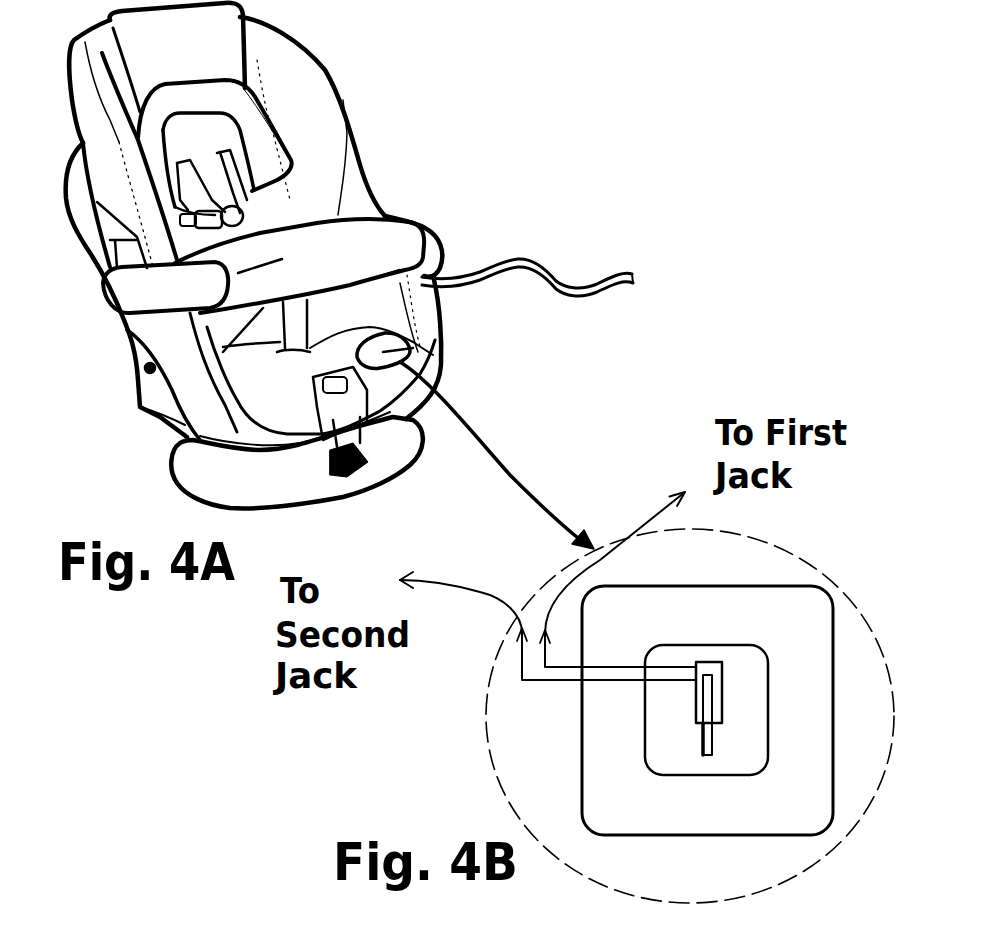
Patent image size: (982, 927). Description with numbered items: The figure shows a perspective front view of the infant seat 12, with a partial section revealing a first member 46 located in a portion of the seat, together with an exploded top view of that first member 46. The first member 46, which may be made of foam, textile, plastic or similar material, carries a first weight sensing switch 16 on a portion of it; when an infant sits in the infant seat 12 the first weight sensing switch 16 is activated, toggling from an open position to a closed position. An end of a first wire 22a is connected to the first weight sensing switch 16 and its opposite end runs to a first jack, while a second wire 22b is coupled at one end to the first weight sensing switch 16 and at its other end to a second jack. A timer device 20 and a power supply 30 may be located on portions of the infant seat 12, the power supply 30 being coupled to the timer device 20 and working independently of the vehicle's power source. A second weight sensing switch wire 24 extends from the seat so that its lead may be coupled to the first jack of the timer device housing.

In FIG. 4A, the infant seat 12 is at (163, 445).
In FIG. 4B, the first weight sensing switch (SW1) 16 is at (710, 723).
In FIG. 4A, the timer device 20 is at (380, 213).
In FIG. 4B, the first wire 22a is at (657, 510).
In FIG. 4B, the second wire 22b is at (435, 580).
In FIG. 4A, the second weight sensing switch wire (SW2 wire) 24 is at (510, 262).
In FIG. 4A, the power supply 30 is at (127, 257).
In FIG. 4A, the first member 46 is at (441, 360).
In FIG. 4B, the first member 46 is at (747, 637).